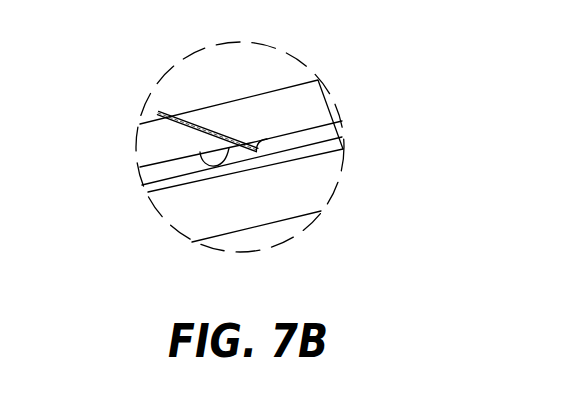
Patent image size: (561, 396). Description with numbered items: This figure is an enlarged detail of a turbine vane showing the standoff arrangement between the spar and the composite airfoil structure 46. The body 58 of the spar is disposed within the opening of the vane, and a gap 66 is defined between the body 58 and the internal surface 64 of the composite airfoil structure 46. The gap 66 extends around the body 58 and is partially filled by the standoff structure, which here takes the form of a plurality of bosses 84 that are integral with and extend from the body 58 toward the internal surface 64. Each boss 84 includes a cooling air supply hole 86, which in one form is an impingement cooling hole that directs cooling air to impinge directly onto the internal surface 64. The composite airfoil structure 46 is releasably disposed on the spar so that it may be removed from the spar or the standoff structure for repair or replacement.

The composite airfoil structure 46 is at (196, 184).
The body 58 is at (260, 123).
The internal surface 64 is at (155, 177).
The gap 66 is at (302, 172).
The boss 84 is at (200, 152).
The cooling air supply hole 86 is at (236, 160).